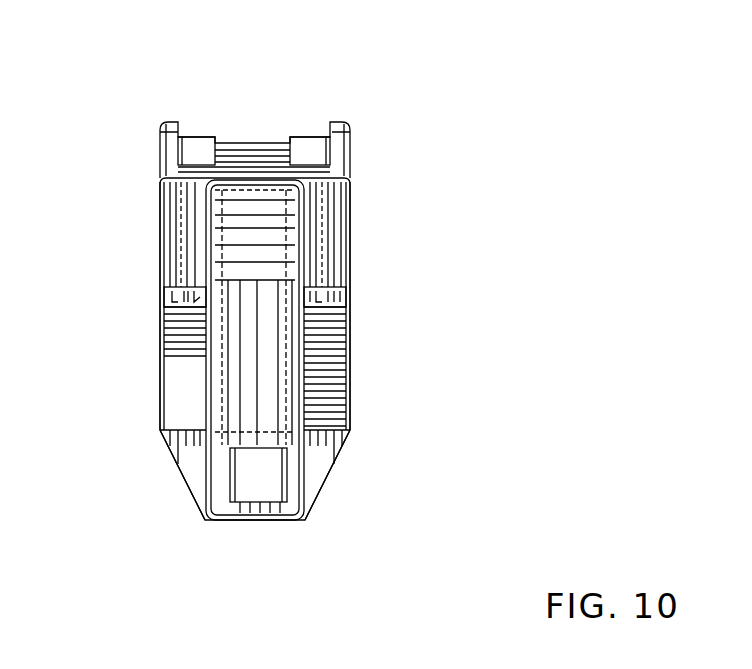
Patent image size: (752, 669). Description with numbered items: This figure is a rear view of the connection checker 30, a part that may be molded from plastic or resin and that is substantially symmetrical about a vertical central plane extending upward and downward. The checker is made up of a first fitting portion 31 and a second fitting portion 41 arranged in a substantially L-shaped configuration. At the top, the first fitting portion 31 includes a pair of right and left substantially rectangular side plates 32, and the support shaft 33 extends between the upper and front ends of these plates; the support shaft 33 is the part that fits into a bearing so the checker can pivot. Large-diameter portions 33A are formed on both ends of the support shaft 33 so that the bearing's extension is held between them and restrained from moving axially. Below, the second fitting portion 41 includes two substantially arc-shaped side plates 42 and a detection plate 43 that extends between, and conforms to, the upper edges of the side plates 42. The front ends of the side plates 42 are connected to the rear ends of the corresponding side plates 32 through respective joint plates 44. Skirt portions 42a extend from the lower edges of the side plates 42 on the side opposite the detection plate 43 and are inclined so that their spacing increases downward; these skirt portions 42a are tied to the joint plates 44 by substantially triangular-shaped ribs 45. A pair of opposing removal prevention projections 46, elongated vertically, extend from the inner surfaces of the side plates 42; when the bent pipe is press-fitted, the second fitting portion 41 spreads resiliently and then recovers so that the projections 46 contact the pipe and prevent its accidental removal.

The connection checker 30 is at (455, 242).
The first fitting portion 31 is at (352, 214).
The side plates 32 is at (156, 212).
The support shaft 33 is at (253, 143).
The large-diameter portions 33A is at (198, 137).
The second fitting portion 41 is at (333, 372).
The side plates 42 is at (202, 398).
The skirt portions 42a is at (168, 448).
The detection plate 43 is at (242, 338).
The joint plates 44 is at (187, 256).
The ribs 45 is at (157, 305).
The removal prevention projections 46 is at (228, 490).